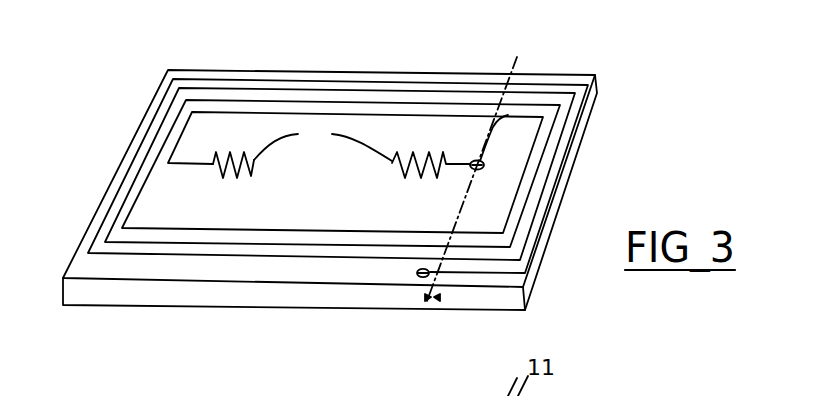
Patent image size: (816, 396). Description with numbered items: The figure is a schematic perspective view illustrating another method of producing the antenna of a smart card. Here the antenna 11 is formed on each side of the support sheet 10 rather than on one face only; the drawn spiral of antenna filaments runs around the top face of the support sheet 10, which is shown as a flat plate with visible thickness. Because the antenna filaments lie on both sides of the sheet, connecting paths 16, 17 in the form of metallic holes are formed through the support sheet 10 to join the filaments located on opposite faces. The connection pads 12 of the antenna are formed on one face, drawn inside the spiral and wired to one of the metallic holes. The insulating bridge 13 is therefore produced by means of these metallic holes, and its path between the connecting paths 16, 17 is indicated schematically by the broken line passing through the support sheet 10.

The support sheet 10 is at (588, 136).
The antenna 11 is at (223, 79).
The connection pads 12 is at (341, 152).
The insulating bridge 13 is at (440, 311).
The connecting path 16 is at (417, 273).
The connecting path 17 is at (502, 101).